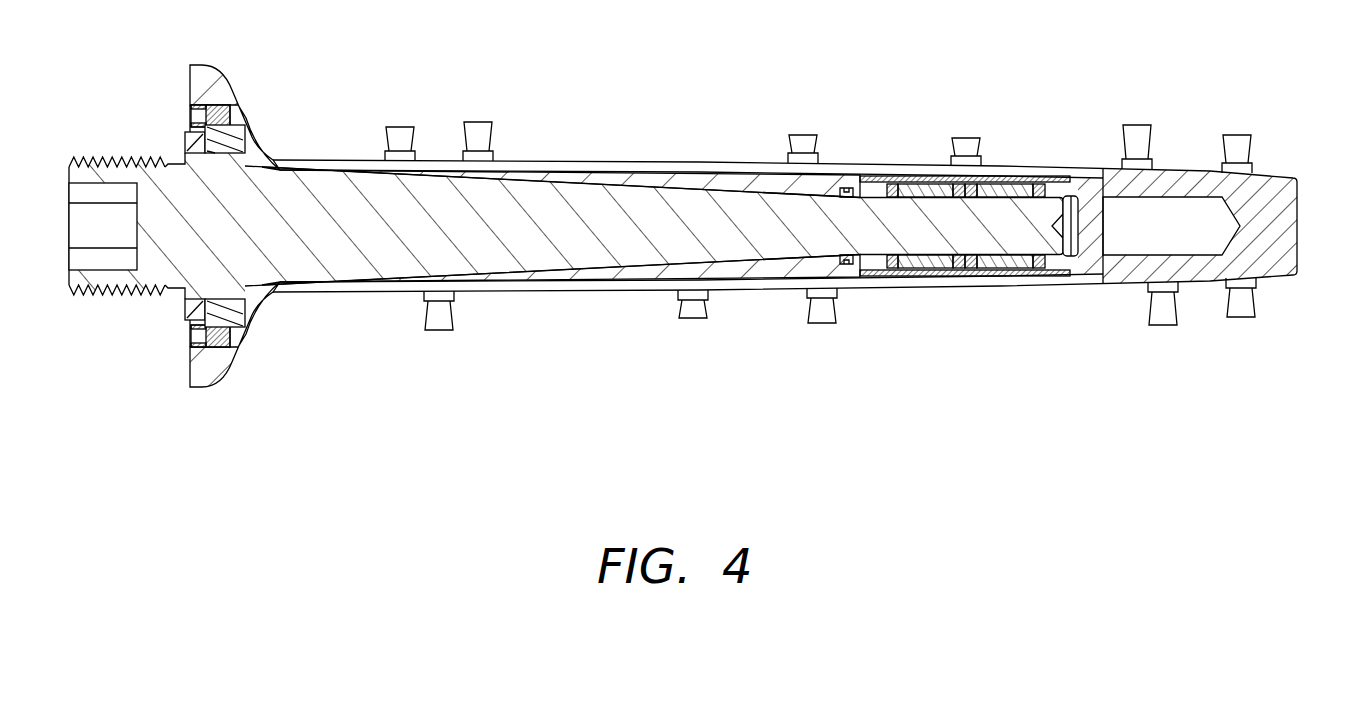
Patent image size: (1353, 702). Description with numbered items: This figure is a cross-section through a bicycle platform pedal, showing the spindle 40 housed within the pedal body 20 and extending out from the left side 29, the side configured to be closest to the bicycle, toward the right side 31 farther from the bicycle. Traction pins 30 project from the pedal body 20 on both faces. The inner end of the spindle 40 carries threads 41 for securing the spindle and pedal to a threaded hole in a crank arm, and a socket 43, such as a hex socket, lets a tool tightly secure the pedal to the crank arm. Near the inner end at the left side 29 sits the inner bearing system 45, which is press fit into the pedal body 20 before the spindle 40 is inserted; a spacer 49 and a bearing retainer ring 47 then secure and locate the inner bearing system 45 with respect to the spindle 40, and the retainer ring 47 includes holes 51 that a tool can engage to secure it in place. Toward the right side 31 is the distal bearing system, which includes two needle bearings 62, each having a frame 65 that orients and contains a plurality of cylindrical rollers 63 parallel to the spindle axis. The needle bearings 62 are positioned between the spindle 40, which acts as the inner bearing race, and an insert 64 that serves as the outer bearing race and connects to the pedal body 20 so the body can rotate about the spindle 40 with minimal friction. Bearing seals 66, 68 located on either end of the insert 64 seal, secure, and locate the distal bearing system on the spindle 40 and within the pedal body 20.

The pedal body 20 is at (700, 185).
The left side 29 is at (190, 87).
The traction pins 30 is at (478, 128).
The right side 31 is at (1300, 215).
The spindle 40 is at (590, 230).
The threads 41 is at (118, 157).
The socket 43 is at (78, 228).
The inner bearing system 45 is at (240, 313).
The bearing retainer ring 47 is at (212, 117).
The spacer 49 is at (192, 313).
The holes 51 is at (195, 117).
The needle bearings 62 is at (990, 262).
The rollers 63 is at (930, 180).
The insert 64 is at (1023, 276).
The frame 65 is at (890, 184).
The bearing seal 66 is at (860, 177).
The bearing seal 68 is at (1085, 196).